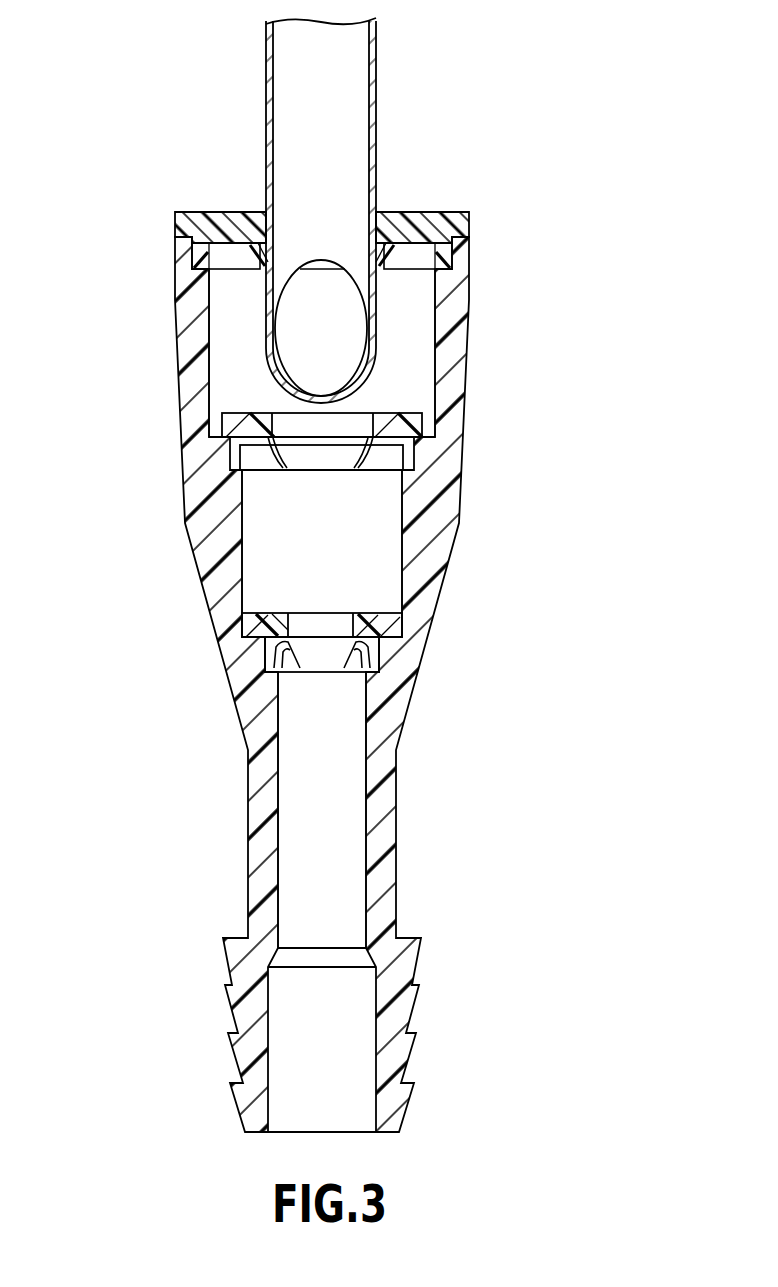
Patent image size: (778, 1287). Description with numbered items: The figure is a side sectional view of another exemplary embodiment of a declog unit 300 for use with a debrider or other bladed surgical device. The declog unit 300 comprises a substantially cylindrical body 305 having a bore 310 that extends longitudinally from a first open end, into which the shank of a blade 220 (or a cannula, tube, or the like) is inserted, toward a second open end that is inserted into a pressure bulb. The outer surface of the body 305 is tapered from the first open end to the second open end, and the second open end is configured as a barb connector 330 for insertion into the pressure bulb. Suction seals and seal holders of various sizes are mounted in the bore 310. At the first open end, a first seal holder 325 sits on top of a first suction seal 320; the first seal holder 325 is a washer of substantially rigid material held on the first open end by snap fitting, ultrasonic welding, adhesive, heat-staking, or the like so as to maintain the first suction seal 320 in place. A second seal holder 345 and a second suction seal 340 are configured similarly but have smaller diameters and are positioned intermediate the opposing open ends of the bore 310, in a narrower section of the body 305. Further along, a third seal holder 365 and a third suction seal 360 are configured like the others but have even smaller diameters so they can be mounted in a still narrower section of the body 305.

The declog unit 300 is at (158, 70).
The blade 220 is at (377, 128).
The first seal holder 325 is at (205, 218).
The first suction seal 320 is at (200, 243).
The bore 310 is at (242, 343).
The second seal holder 345 is at (410, 412).
The second suction seal 340 is at (402, 455).
The body 305 is at (463, 497).
The third seal holder 365 is at (402, 607).
The third suction seal 360 is at (372, 656).
The barb connector 330 is at (223, 1017).